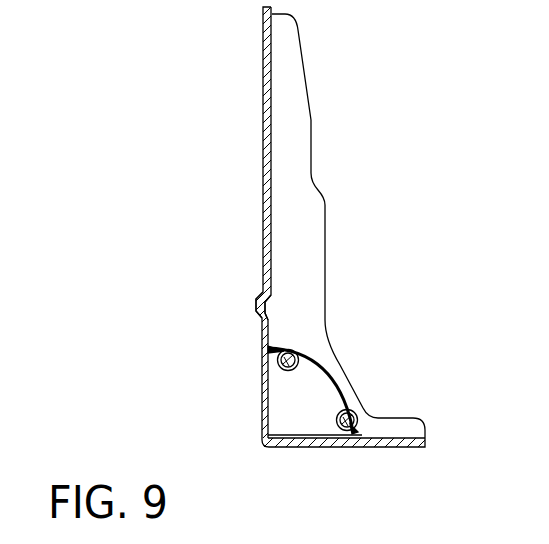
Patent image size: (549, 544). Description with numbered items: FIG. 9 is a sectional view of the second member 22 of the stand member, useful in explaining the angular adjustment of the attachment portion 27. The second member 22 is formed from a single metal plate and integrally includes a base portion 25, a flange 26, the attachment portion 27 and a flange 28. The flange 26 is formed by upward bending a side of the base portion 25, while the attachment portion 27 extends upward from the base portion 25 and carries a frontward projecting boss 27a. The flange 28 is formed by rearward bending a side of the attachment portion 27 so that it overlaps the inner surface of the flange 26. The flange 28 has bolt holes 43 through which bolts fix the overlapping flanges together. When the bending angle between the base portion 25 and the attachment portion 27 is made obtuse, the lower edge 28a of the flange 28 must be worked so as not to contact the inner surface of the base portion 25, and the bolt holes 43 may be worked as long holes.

The second member 22 is at (364, 180).
The base portion 25 is at (297, 449).
The flanges 26 is at (400, 418).
The attachment portion 27 is at (263, 116).
The boss 27a is at (256, 297).
The flanges 28 is at (298, 72).
The lower edges 28a is at (325, 449).
The bolt holes 43 is at (279, 362).